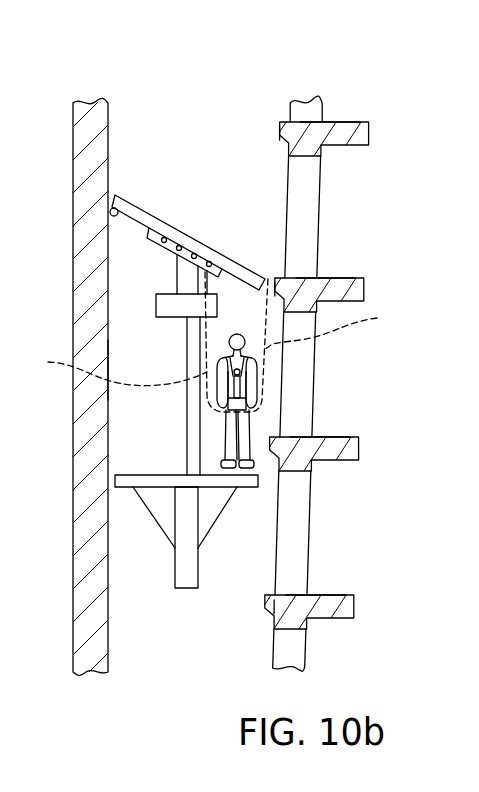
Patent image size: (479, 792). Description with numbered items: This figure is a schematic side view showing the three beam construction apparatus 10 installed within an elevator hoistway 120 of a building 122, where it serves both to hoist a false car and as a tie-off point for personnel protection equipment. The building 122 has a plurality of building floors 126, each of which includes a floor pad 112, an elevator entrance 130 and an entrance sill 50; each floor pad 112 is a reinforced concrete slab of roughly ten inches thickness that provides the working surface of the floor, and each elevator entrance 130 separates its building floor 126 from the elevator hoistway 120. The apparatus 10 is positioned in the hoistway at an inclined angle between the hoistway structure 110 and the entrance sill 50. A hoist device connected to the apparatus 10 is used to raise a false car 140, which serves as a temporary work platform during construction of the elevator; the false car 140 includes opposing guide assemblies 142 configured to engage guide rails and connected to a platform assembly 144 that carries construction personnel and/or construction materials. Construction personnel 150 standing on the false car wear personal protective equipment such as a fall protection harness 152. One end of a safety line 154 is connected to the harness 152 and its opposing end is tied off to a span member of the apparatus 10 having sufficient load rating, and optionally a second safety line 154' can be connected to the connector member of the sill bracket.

The apparatus 10 is at (130, 218).
The entrance sill 50 is at (278, 130).
The hoistway structure 110 is at (110, 365).
The floor pad 112 is at (370, 128).
The elevator hoistway 120 is at (138, 650).
The building 122 is at (127, 51).
The building floor 126 is at (343, 122).
The elevator entrance 130 is at (317, 207).
The false car 140 is at (175, 566).
The guide assembly 142 is at (198, 570).
The platform assembly 144 is at (125, 475).
The construction personnel 150 is at (220, 437).
The fall protection harness 152 is at (260, 414).
The safety line 154 is at (112, 368).
The safety line 154' is at (340, 328).